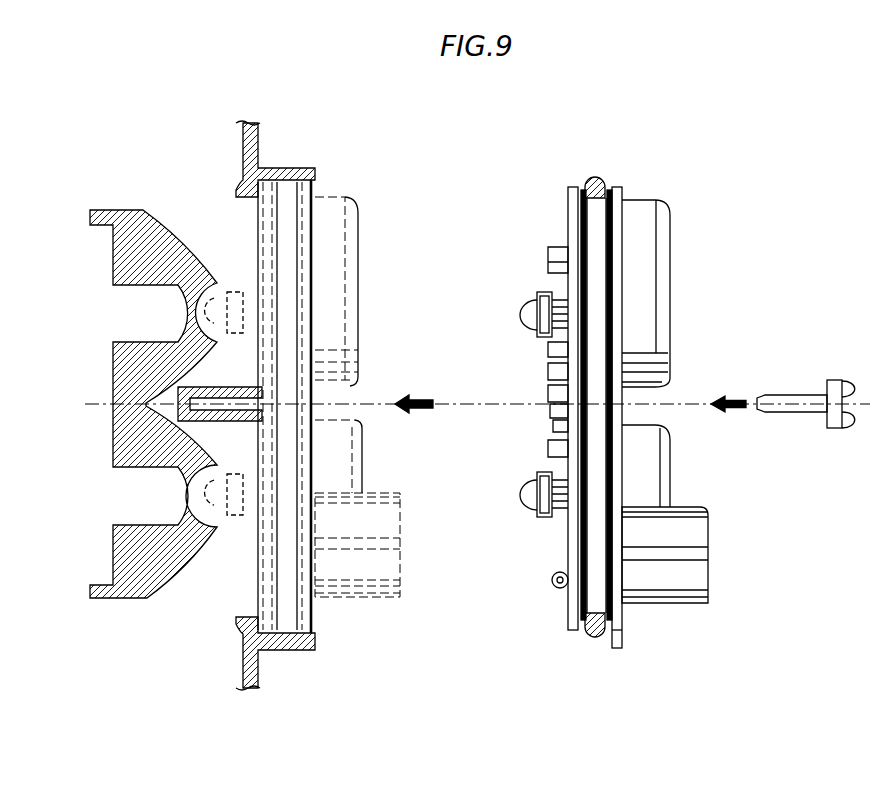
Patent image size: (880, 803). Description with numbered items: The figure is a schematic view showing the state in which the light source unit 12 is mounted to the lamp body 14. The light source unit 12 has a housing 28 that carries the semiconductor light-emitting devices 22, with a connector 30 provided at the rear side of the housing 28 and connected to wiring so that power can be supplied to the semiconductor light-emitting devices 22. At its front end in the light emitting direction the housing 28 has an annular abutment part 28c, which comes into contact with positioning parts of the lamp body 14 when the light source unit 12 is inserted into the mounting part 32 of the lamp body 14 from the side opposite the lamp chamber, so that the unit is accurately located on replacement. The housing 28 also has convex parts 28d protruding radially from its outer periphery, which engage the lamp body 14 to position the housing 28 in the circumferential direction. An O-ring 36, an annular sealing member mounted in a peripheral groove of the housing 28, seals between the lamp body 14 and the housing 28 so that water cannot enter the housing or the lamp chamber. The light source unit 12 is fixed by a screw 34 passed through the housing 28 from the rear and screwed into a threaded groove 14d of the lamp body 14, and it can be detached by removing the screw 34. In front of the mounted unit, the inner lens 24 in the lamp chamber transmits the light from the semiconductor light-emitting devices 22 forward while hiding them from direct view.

The light source unit 12 is at (660, 632).
The lamp body 14 is at (285, 168).
The threaded groove 14d is at (241, 413).
The semiconductor light-emitting device 22 is at (522, 303).
The inner lens 24 is at (162, 582).
The housing 28 is at (622, 190).
The abutment part 28c is at (566, 191).
The convex part 28d is at (617, 650).
The connector 30 is at (690, 607).
The mounting part 32 is at (251, 251).
The screw 34 is at (797, 394).
The O-ring 36 is at (597, 177).